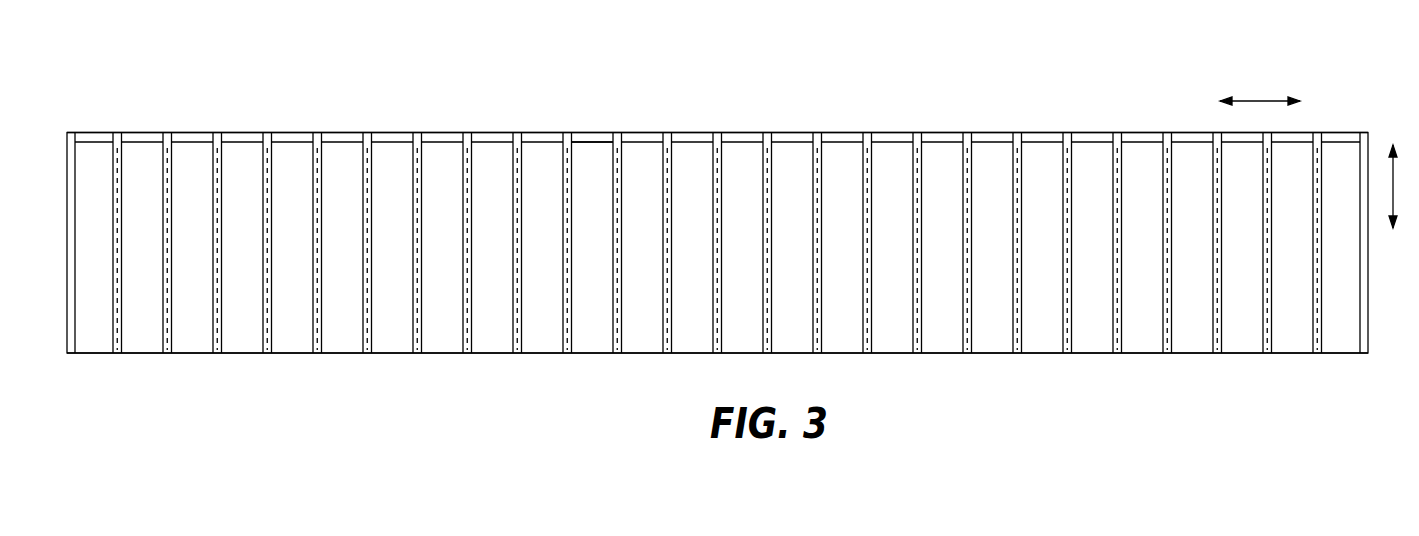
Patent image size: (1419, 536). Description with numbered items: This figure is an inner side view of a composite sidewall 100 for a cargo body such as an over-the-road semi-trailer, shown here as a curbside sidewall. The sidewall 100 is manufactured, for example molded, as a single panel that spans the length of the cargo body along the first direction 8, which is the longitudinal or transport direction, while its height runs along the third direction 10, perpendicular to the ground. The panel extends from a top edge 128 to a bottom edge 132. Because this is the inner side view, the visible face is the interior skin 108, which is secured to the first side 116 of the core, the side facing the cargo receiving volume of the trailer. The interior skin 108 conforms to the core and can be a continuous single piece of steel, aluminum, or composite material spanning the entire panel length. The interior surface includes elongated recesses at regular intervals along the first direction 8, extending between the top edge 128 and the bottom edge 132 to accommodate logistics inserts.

The composite sidewall 100 is at (167, 90).
The top edge 128 is at (288, 132).
The interior skin 108 is at (444, 165).
The first side 116 is at (590, 160).
The bottom edge 132 is at (292, 343).
The first direction 8 is at (1257, 97).
The third direction 10 is at (1393, 183).